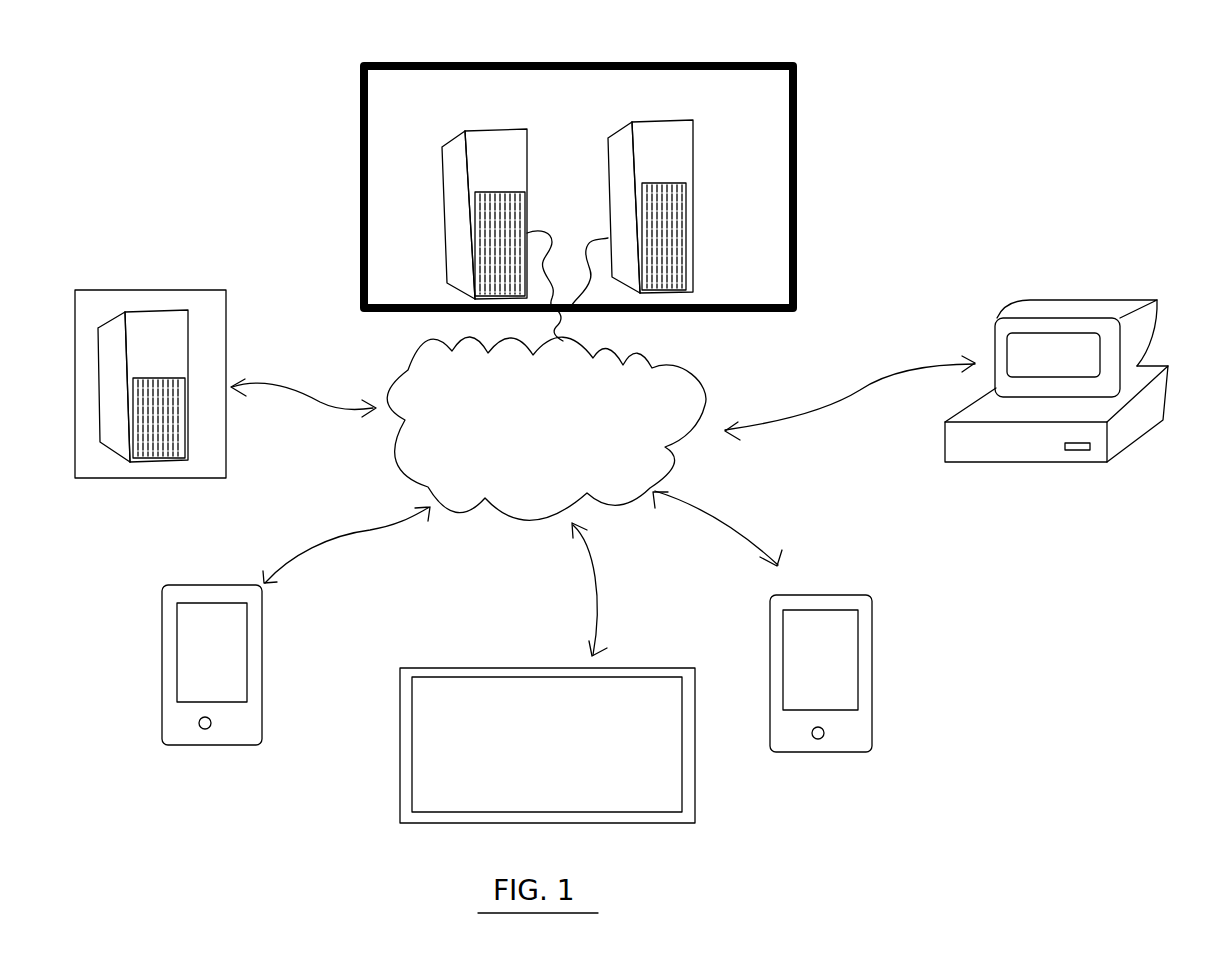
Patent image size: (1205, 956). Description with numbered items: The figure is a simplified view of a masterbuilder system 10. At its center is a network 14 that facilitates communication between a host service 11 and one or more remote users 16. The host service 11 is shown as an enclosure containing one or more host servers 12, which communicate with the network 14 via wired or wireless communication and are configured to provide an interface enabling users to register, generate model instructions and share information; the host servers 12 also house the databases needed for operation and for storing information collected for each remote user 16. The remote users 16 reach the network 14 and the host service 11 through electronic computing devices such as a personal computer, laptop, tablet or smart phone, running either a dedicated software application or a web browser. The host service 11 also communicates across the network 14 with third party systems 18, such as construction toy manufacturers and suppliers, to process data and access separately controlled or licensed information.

The system 10 is at (1025, 86).
The host service 11 is at (797, 148).
The host server 12 is at (443, 186).
The network 14 is at (552, 455).
The remote user 16 is at (1047, 300).
The third party system 18 is at (122, 290).